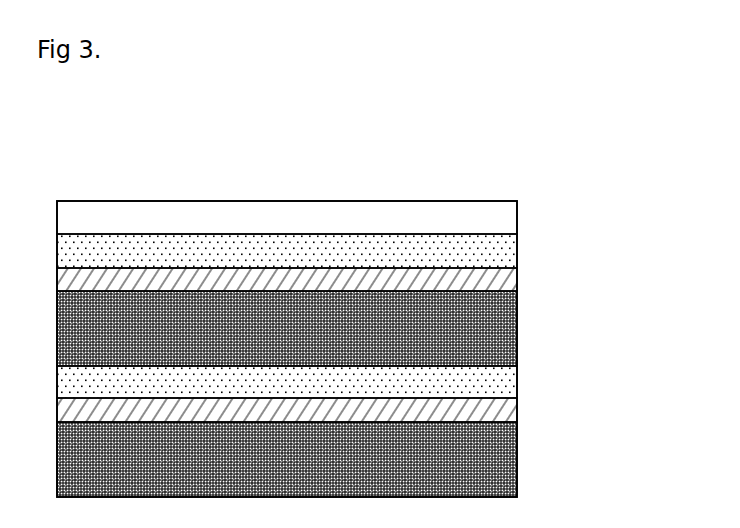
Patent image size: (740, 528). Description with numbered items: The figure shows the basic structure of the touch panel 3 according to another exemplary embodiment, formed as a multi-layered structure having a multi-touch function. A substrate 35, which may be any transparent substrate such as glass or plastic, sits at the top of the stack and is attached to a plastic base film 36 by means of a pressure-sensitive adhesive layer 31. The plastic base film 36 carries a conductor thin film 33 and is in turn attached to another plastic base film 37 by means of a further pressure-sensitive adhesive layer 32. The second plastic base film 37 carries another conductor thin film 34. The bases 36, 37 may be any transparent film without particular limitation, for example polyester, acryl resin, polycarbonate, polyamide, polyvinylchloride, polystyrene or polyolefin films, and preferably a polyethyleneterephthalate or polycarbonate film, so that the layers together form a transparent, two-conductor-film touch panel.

The basic structure of the touch panel 3 is at (375, 184).
The substrate 35 is at (511, 213).
The pressure-sensitive adhesive layer 31 is at (506, 250).
The conductor thin film 33 is at (515, 279).
The plastic base film 36 is at (512, 325).
The pressure-sensitive adhesive layer 32 is at (515, 382).
The conductor thin film 34 is at (515, 411).
The plastic base film 37 is at (515, 461).